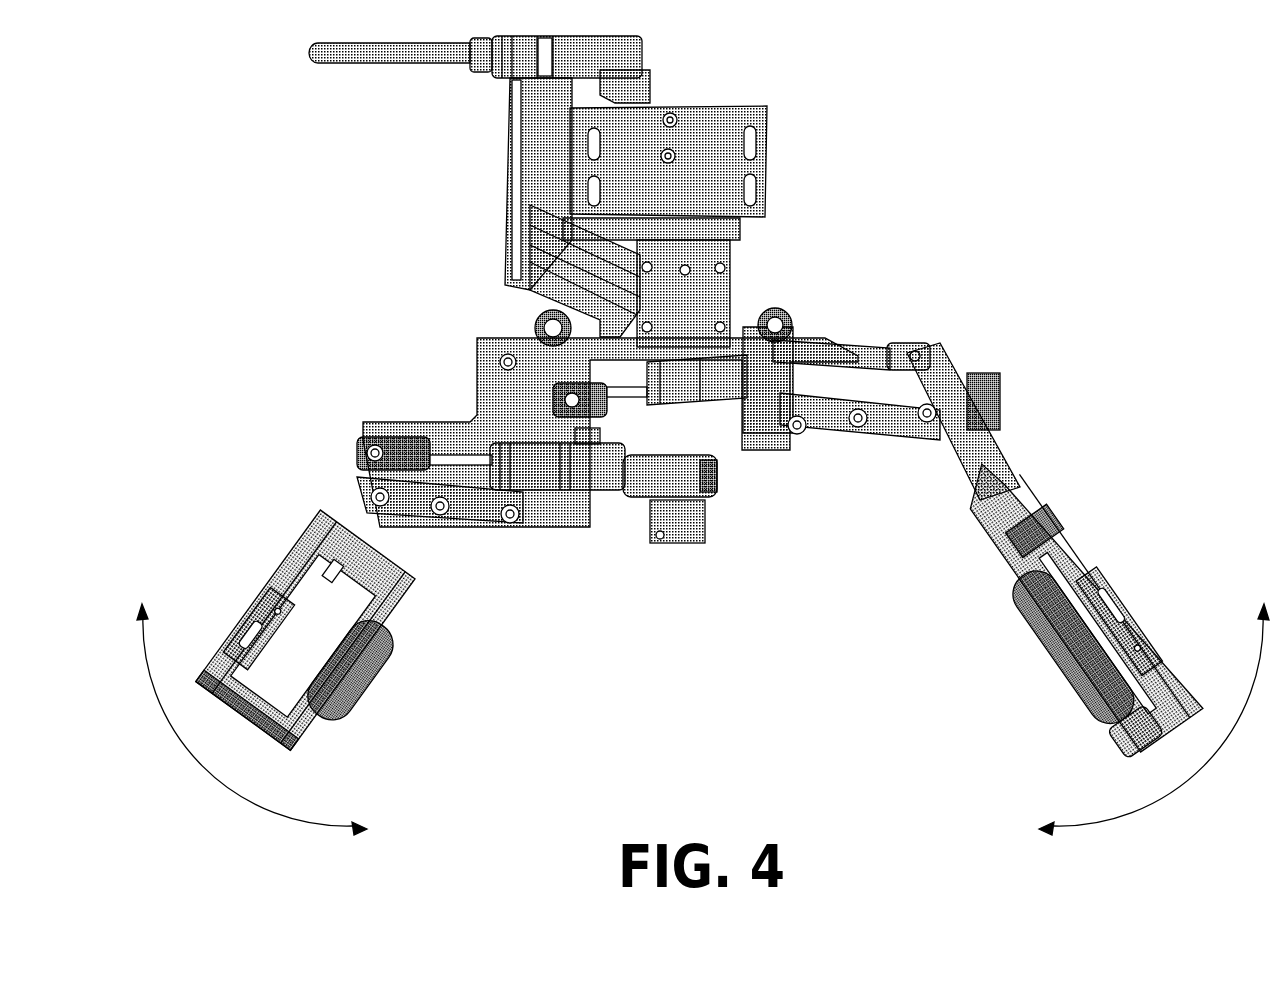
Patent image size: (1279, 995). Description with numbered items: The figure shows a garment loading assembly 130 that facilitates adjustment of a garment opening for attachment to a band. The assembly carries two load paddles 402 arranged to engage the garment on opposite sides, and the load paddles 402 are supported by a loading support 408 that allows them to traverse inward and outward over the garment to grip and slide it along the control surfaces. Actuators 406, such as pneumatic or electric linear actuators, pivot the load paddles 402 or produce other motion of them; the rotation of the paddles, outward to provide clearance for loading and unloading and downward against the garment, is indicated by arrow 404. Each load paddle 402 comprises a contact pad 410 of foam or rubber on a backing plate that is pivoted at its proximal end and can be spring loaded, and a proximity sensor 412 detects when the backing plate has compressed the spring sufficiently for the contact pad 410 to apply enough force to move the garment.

The garment loading assembly 130 is at (897, 150).
The load paddles 402 is at (318, 770).
The arrow 404 is at (257, 803).
The actuators 406 is at (711, 434).
The loading support 408 is at (540, 285).
The contact pad 410 is at (385, 696).
The proximity sensor 412 is at (270, 633).